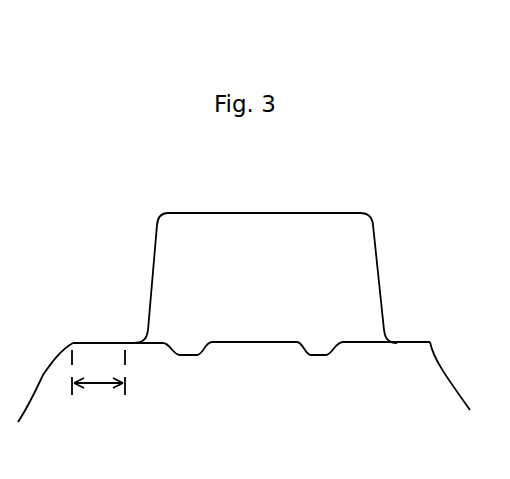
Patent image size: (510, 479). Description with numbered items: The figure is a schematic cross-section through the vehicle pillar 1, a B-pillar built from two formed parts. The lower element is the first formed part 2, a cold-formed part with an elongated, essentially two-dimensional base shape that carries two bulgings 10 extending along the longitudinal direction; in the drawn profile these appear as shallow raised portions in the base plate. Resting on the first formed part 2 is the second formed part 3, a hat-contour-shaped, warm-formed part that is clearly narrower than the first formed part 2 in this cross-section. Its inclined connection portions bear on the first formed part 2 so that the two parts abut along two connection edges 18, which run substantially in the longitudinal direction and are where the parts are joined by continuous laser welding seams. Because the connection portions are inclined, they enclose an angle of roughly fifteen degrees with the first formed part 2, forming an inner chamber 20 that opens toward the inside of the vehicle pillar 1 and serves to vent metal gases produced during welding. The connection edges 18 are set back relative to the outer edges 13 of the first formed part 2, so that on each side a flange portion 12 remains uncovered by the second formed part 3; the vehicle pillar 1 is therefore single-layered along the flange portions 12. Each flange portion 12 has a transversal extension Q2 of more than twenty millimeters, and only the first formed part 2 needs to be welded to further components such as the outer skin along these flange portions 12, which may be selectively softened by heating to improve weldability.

The vehicle pillar 1 is at (358, 146).
The first formed part 2 is at (358, 343).
The second formed part 3 is at (360, 213).
The bulgings 10 is at (180, 357).
The flange portions 12 is at (110, 330).
The outer edges 13 is at (243, 400).
The connection edges 18 is at (134, 331).
The inner chamber 20 is at (258, 285).
The transversal extension Q2 is at (95, 387).